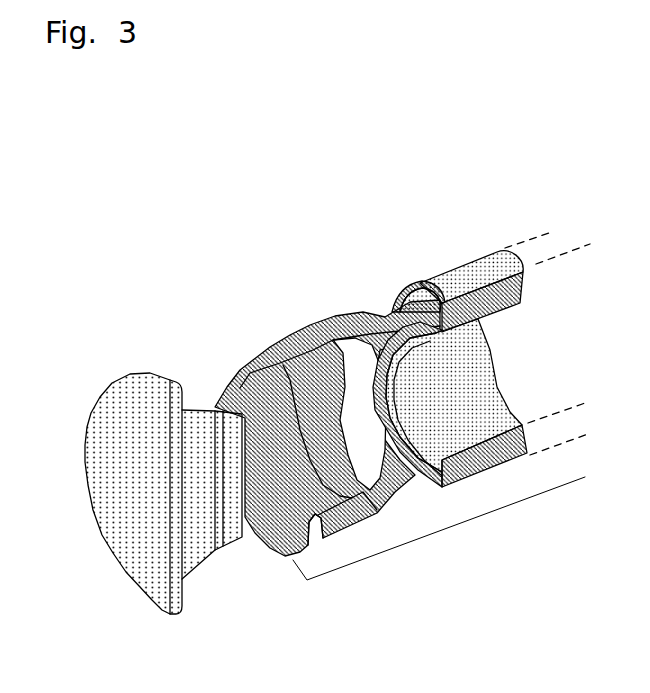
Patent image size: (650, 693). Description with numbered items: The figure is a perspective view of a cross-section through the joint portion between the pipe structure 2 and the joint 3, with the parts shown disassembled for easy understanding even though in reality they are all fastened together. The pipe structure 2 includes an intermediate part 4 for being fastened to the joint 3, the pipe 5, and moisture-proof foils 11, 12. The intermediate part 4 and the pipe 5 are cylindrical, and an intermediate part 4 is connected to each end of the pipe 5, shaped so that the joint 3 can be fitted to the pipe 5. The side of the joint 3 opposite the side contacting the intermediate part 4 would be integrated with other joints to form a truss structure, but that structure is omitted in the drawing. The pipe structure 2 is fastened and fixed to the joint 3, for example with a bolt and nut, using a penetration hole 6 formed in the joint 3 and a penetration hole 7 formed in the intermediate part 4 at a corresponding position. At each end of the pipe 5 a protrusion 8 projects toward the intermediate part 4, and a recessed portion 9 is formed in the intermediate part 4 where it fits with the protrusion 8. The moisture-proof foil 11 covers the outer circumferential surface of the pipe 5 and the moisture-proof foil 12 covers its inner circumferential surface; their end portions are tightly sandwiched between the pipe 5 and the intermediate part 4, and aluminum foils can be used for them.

The pipe structure 2 is at (448, 530).
The joint 3 is at (105, 410).
The intermediate part 4 is at (327, 437).
The pipe 5 is at (485, 388).
The penetration hole 6 is at (223, 548).
The penetration hole 7 is at (323, 545).
The protrusion 8 is at (398, 312).
The recessed portion 9 is at (397, 530).
The moisture-proof foil 11 is at (468, 267).
The moisture-proof foil 12 is at (493, 372).